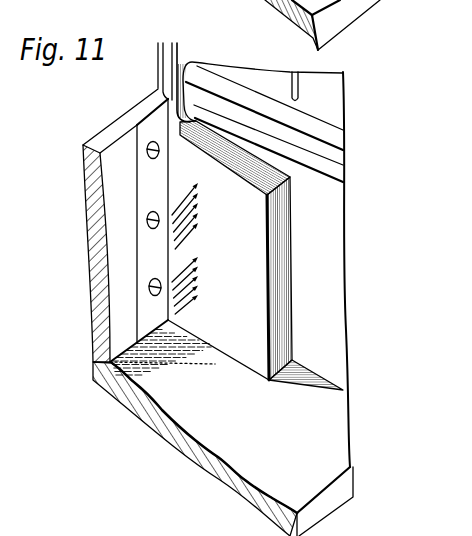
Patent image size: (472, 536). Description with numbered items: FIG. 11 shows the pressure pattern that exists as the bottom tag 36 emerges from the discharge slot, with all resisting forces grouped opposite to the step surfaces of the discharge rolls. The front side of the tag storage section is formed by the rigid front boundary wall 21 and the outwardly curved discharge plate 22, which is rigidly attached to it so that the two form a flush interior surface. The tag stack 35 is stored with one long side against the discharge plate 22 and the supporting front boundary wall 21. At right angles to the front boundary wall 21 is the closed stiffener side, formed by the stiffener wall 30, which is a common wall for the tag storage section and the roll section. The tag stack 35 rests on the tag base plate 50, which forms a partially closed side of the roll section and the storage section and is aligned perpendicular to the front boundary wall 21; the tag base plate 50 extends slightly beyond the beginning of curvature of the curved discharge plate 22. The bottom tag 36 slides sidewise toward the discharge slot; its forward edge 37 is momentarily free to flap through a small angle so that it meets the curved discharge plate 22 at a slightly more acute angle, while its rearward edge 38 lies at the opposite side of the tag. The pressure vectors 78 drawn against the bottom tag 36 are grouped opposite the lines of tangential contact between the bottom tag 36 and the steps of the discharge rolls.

The front boundary wall 21 is at (125, 128).
The outwardly curved discharge plate 22 is at (156, 54).
The stiffener wall 30 is at (199, 403).
The tag stack 35 is at (249, 333).
The bottom tag 36 is at (189, 86).
The forward edge 37 is at (177, 45).
The rearward edge 38 is at (224, 135).
The tag base plate 50 is at (325, 283).
The pressure vectors 78 is at (186, 268).